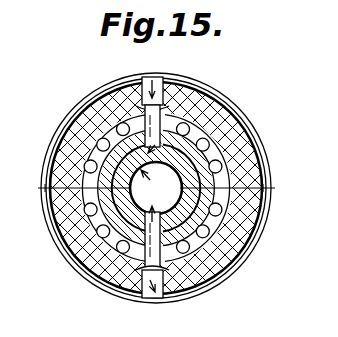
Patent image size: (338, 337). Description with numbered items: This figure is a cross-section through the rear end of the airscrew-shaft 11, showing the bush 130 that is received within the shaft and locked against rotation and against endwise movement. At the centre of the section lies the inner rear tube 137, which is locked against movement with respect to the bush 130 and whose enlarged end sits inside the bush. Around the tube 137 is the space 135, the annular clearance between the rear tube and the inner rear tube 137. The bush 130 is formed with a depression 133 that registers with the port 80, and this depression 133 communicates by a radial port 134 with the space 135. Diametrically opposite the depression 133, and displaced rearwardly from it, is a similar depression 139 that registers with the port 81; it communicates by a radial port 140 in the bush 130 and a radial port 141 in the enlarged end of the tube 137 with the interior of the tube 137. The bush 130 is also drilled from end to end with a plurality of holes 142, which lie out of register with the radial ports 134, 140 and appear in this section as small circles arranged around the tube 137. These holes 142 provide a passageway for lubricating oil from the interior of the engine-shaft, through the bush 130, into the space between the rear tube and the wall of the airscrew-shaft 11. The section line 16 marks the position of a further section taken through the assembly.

The airscrew-shaft 11 is at (104, 102).
The inner rear tube 137 is at (136, 160).
The port 80 is at (168, 79).
The depression 133 is at (181, 74).
The radial port 134 is at (205, 88).
The holes 142 is at (220, 140).
The space 135 is at (248, 167).
The radial port 141 is at (240, 222).
The radial port 140 is at (196, 276).
The depression 139 is at (186, 303).
The port 81 is at (166, 299).
The bush 130 is at (72, 222).
The section line 16 is at (72, 266).